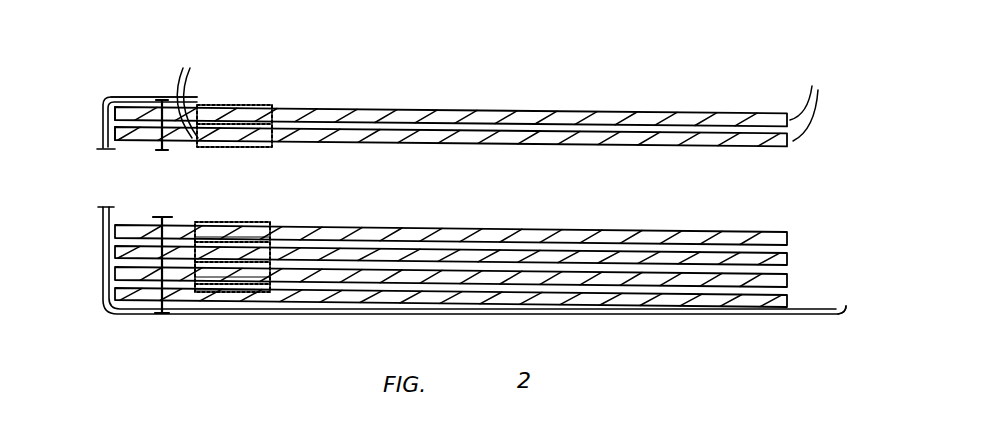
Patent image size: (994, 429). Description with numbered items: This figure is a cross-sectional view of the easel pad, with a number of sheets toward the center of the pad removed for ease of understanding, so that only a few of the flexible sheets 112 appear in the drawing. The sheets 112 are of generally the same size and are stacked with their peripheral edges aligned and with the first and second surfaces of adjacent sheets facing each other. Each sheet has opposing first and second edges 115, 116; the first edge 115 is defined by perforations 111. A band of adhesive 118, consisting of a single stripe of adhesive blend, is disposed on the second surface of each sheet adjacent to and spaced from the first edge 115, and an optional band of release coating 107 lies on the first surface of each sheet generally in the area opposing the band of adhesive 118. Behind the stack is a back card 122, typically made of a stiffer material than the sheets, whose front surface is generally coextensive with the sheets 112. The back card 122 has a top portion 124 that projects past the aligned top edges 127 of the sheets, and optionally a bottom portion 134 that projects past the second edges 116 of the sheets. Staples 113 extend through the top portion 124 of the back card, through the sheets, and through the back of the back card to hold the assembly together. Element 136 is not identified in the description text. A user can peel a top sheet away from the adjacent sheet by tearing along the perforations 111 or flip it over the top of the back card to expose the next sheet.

The band of release coating 107 is at (222, 112).
The perforations 111 is at (196, 90).
The flexible sheets 112 is at (568, 119).
The staples 113 is at (157, 127).
The first edge 115 is at (197, 293).
The second edge 116 is at (811, 99).
The band of adhesive 118 is at (262, 262).
The back card 122 is at (104, 93).
The top portion 124 is at (147, 97).
The top edges 127 is at (110, 129).
The bottom portion 134 is at (802, 315).
The base plate end 136 is at (842, 310).